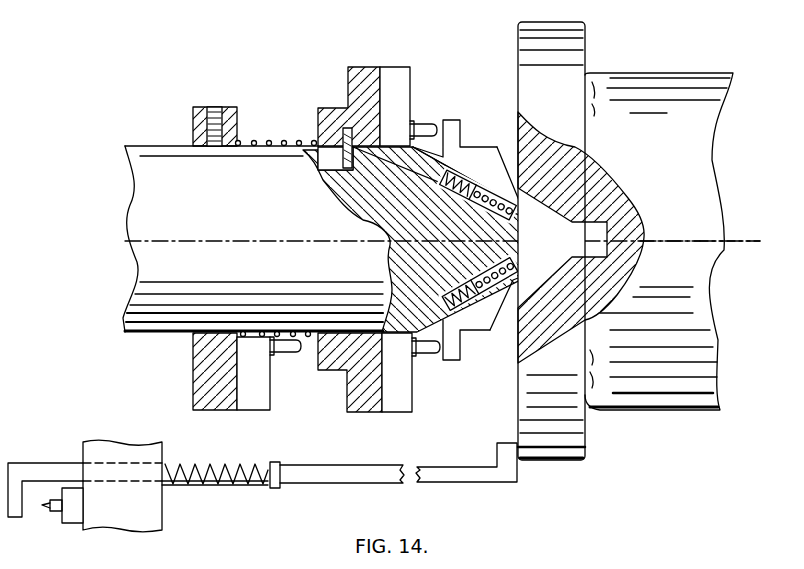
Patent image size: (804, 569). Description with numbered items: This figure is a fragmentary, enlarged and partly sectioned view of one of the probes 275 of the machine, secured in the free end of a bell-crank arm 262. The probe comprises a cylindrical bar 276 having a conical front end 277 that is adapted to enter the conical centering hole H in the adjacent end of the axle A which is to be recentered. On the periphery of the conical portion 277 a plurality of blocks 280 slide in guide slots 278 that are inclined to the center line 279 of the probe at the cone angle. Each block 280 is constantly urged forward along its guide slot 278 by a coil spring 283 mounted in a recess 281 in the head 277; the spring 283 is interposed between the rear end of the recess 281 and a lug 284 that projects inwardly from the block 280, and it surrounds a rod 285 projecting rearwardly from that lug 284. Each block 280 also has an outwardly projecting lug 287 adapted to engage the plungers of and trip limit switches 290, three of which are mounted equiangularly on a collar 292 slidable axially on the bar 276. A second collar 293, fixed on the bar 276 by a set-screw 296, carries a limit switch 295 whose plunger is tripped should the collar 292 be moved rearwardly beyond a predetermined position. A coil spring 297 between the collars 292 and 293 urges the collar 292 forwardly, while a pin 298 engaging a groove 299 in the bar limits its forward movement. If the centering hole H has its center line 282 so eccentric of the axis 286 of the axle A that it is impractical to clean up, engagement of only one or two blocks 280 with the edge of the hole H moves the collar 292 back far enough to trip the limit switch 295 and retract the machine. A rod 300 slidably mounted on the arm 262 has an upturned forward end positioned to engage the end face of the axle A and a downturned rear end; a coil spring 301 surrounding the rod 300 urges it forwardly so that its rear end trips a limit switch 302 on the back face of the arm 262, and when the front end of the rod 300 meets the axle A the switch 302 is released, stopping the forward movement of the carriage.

The probe 275 is at (268, 79).
The cylindrical bar 276 is at (128, 254).
The conical front end 277 is at (596, 182).
The guide slot 278 is at (440, 153).
The center line 279 is at (290, 238).
The block 280 is at (481, 154).
The recess 281 is at (480, 297).
The center line of the centering hole 282 is at (660, 240).
The coil spring 283 is at (462, 331).
The lug 284 is at (515, 283).
The rod 285 is at (480, 188).
The axis of the axle 286 is at (745, 243).
The lug 287 is at (453, 124).
The limit switch 290 is at (397, 72).
The collar 292 is at (362, 68).
The second collar 293 is at (200, 394).
The limit switch 295 is at (257, 402).
The set-screw 296 is at (200, 125).
The coil spring 297 is at (272, 141).
The pin 298 is at (356, 164).
The groove 299 is at (330, 164).
The rod 300 is at (353, 472).
The coil spring 301 is at (235, 485).
The limit switch 302 is at (67, 523).
The bell-crank arm 262 is at (162, 518).
The axle A is at (673, 398).
The conical centering hole H is at (583, 262).